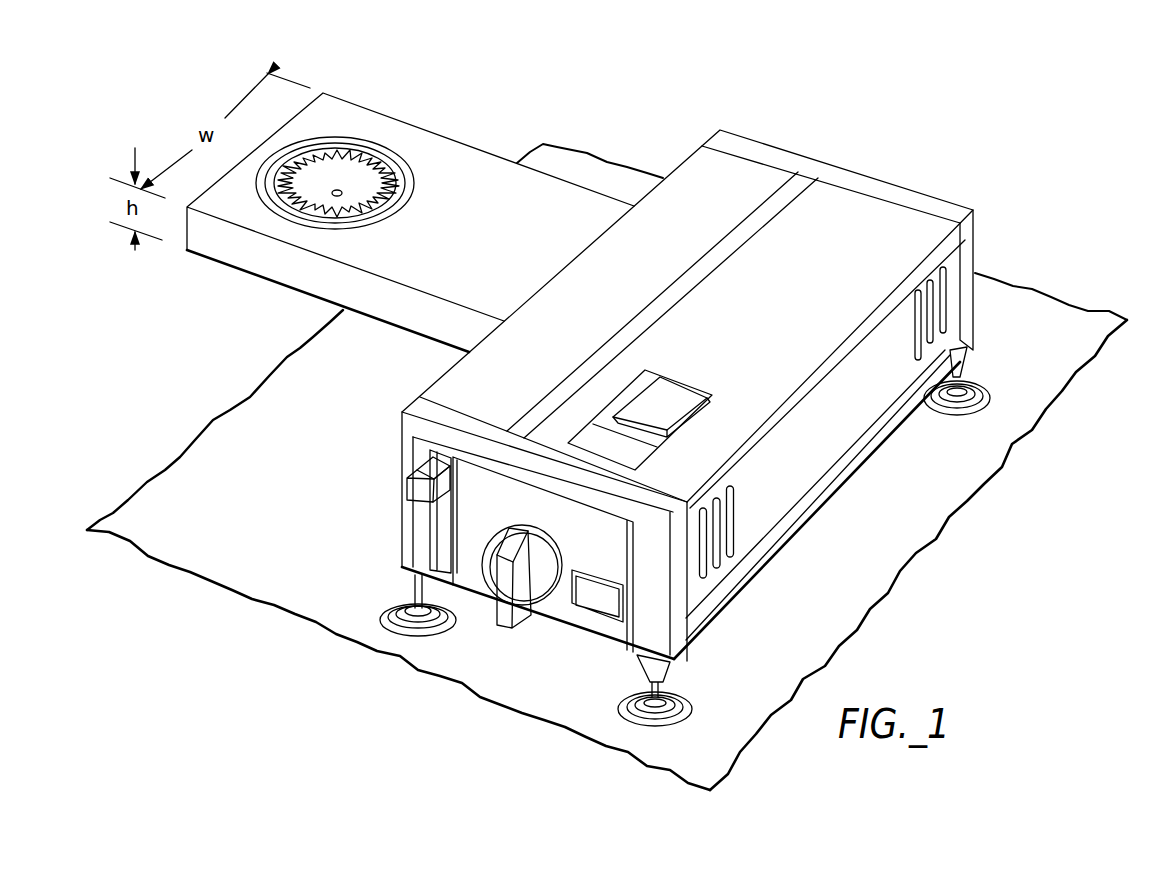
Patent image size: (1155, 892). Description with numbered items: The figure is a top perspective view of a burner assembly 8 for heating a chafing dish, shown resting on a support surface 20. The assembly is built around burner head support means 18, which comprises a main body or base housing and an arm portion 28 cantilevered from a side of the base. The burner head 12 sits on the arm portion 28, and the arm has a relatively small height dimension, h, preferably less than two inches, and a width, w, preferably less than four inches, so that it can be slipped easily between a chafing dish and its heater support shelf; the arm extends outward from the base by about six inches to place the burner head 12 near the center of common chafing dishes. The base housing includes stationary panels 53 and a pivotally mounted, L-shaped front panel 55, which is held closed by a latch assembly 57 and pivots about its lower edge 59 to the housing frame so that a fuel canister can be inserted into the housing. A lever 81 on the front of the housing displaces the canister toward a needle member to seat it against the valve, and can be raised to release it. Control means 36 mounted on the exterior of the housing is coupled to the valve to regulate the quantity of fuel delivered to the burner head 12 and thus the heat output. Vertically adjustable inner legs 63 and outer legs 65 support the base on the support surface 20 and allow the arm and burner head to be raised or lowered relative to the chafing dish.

The burner assembly 8 is at (928, 180).
The burner head 12 is at (343, 183).
The burner head support means 18 is at (346, 386).
The support surface 20 is at (957, 500).
The arm portion 28 is at (275, 292).
The control means 36 is at (532, 616).
The stationary panels 53 is at (616, 284).
The front panel 55 is at (807, 363).
The latch assembly 57 is at (668, 395).
The lower edge 59 is at (785, 536).
The inner legs 63 is at (414, 578).
The outer legs 65 is at (962, 380).
The lever 81 is at (418, 487).